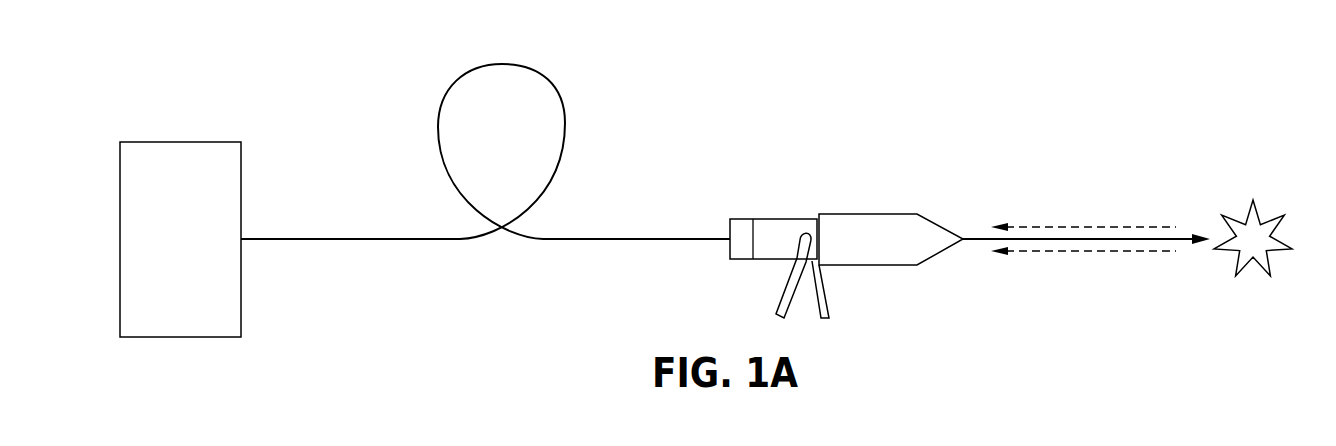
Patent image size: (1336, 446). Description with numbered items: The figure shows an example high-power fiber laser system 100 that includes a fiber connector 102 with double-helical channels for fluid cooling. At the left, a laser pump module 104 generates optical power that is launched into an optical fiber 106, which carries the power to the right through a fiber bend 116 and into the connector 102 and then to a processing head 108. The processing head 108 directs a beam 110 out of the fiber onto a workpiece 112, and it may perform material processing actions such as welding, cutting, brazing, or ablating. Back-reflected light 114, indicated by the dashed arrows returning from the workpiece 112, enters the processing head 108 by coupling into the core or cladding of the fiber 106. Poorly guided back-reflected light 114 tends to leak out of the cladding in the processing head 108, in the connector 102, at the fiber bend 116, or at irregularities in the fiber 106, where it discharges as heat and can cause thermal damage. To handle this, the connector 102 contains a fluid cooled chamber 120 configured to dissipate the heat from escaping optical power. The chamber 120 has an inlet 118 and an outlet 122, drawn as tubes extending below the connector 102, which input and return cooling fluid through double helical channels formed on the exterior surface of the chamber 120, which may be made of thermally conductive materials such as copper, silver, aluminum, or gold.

The high-power fiber laser system 100 is at (878, 92).
The fiber connector 102 is at (763, 219).
The laser pump module 104 is at (165, 251).
The optical fiber 106 is at (636, 238).
The processing head 108 is at (876, 214).
The beam 110 is at (1125, 237).
The workpiece 112 is at (1263, 206).
The back-reflected light 114 is at (1054, 226).
The fiber bend 116 is at (438, 128).
The inlet 118 is at (790, 290).
The fluid cooled chamber 120 is at (805, 219).
The outlet 122 is at (826, 292).